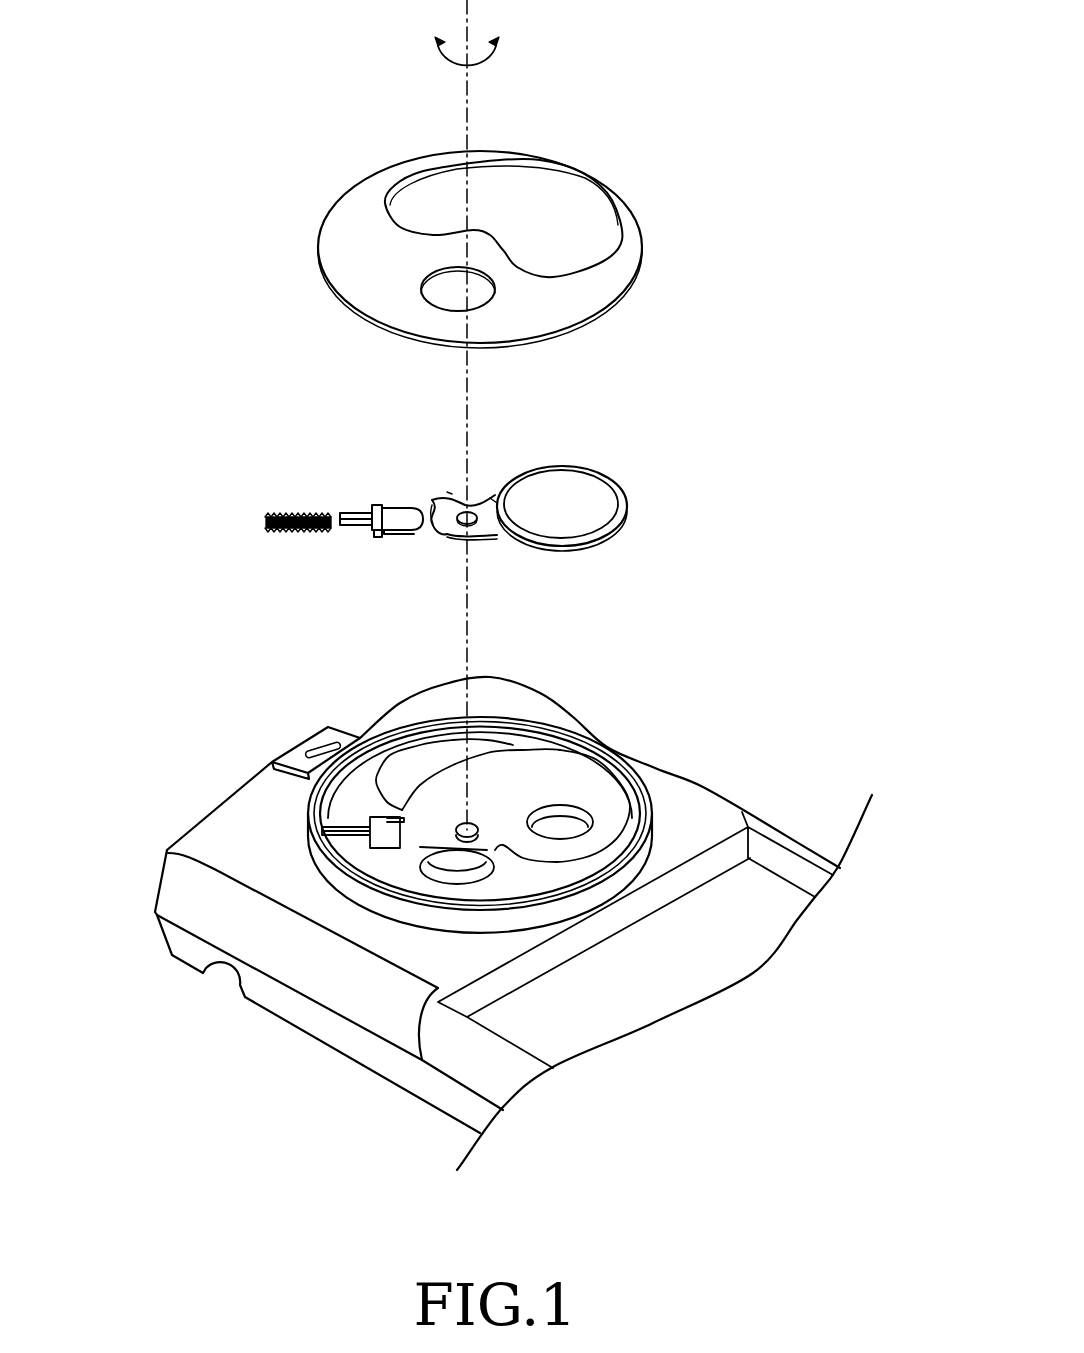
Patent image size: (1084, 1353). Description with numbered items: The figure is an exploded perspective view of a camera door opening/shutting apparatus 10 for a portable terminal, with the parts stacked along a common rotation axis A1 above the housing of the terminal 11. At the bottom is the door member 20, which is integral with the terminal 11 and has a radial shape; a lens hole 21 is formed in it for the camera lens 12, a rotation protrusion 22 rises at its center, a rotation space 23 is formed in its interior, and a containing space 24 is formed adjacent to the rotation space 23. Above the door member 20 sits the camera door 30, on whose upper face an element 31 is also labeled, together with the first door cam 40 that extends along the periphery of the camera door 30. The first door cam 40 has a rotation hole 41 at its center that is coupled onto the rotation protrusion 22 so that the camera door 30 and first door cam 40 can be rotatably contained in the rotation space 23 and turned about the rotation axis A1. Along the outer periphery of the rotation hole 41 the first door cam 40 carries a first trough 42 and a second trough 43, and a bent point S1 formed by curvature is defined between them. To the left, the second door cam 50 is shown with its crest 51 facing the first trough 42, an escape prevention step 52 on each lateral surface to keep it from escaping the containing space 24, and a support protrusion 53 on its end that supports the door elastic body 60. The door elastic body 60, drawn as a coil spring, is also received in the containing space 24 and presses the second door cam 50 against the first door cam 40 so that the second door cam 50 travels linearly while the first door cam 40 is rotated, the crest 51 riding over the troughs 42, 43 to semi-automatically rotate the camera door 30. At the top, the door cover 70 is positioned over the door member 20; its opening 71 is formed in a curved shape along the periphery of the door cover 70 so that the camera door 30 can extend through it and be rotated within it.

The rotation axis A1 is at (469, 12).
The camera door opening/shutting apparatus 10 is at (722, 183).
The terminal 11 is at (350, 1064).
The camera lens 12 is at (562, 832).
The door member 20 is at (622, 632).
The lens hole 21 is at (583, 813).
The rotation protrusion 22 is at (575, 777).
The rotation space 23 is at (490, 747).
The containing space 24 is at (470, 827).
The camera door 30 is at (612, 474).
The disc top surface 31 is at (600, 505).
The first door cam 40 is at (453, 540).
The rotation hole 41 is at (483, 535).
The first trough 42 is at (437, 518).
The second trough 43 is at (486, 489).
The bent point S1 is at (447, 490).
The second door cam 50 is at (327, 408).
The crest 51 is at (420, 508).
The escape prevention step 52 is at (376, 506).
The support protrusion 53 is at (350, 510).
The door elastic body 60 is at (293, 532).
The door cover 70 is at (584, 172).
The opening 71 is at (598, 242).